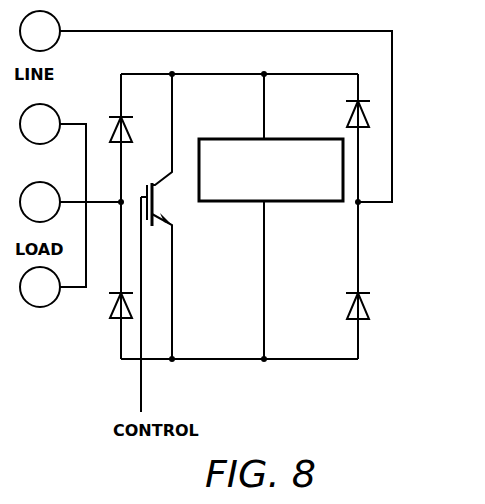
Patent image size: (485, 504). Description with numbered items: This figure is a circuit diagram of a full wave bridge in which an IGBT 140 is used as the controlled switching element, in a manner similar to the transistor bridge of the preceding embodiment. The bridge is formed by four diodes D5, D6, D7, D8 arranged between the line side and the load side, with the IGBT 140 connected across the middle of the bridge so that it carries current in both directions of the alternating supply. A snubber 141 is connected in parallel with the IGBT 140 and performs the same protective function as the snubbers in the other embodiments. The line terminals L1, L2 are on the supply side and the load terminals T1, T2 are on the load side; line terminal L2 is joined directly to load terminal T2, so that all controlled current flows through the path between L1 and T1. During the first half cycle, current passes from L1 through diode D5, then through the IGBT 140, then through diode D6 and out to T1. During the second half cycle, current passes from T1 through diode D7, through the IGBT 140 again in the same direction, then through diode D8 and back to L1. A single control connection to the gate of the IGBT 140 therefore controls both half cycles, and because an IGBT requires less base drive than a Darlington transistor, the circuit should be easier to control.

The IGBT 140 is at (176, 204).
The snubber 141 is at (232, 139).
The diode D5 is at (350, 108).
The diode D6 is at (110, 312).
The diode D7 is at (134, 121).
The diode D8 is at (345, 313).
The line terminal L1 is at (40, 31).
The line terminal L2 is at (40, 124).
The load terminal T1 is at (40, 202).
The load terminal T2 is at (40, 287).